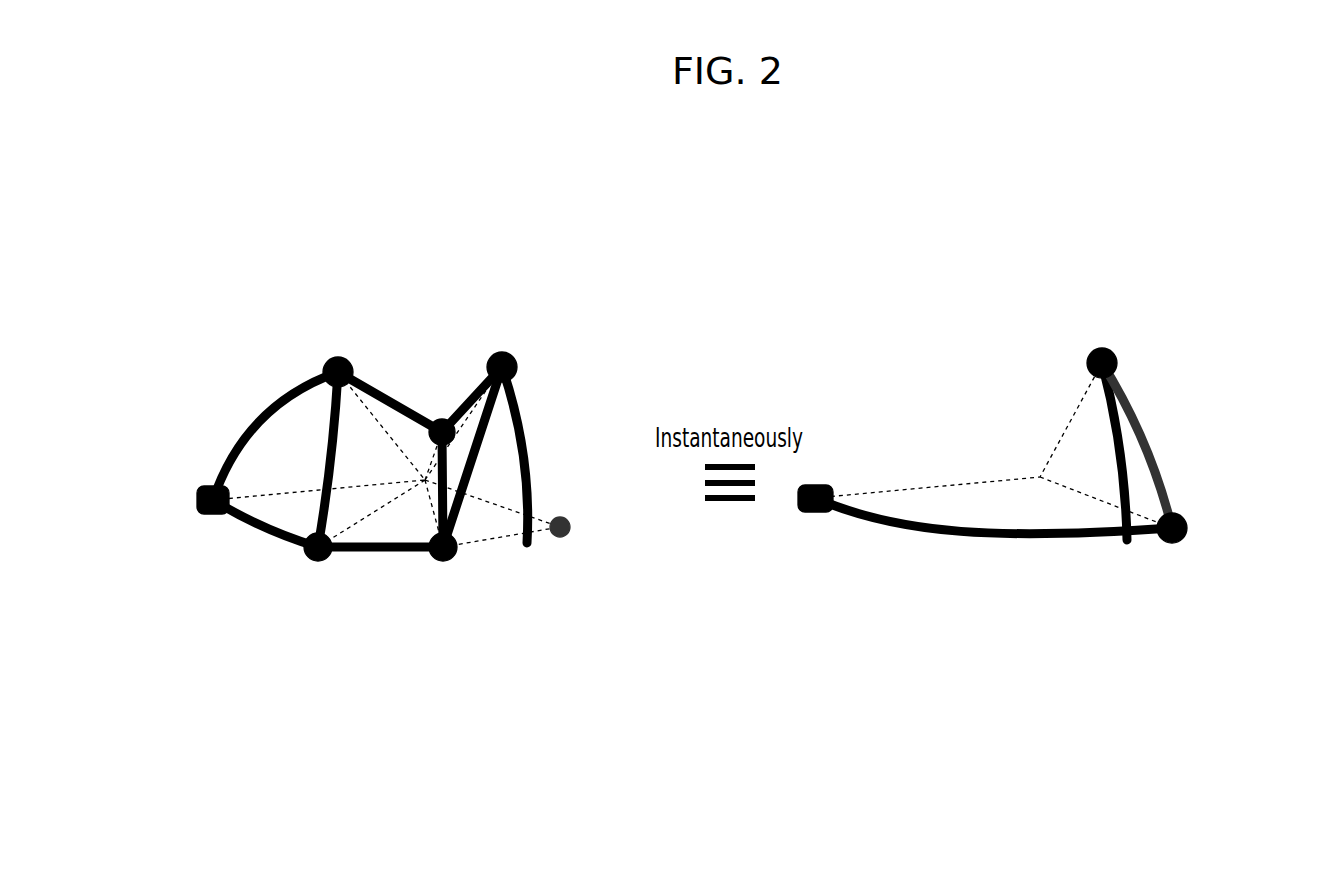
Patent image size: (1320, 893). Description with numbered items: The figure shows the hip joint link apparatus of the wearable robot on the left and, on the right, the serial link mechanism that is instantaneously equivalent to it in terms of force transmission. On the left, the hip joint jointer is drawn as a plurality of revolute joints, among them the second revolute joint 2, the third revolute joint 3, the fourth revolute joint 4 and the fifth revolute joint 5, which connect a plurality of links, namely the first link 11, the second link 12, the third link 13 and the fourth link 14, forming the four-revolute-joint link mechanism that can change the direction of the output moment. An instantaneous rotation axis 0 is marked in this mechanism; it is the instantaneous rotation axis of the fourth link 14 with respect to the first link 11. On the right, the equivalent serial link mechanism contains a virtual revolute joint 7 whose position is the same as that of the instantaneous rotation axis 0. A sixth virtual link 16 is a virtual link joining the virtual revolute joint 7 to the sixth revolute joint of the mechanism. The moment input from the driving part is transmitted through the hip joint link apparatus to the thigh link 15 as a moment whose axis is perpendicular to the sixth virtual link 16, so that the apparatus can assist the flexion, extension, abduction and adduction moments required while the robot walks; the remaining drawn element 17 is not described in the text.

The instantaneous rotation axis 0 is at (566, 533).
The second revolute joint 2 is at (330, 358).
The third revolute joint 3 is at (440, 420).
The fourth revolute joint 4 is at (450, 560).
The fifth revolute joint 5 is at (312, 557).
The virtual revolute joint 7 is at (1170, 543).
The first link 11 is at (290, 450).
The second link 12 is at (382, 395).
The third link 13 is at (385, 555).
The fourth link 14 is at (468, 437).
The thigh link 15 is at (527, 465).
The sixth virtual link 16 is at (1133, 423).
The geodesic edge 17 is at (958, 536).